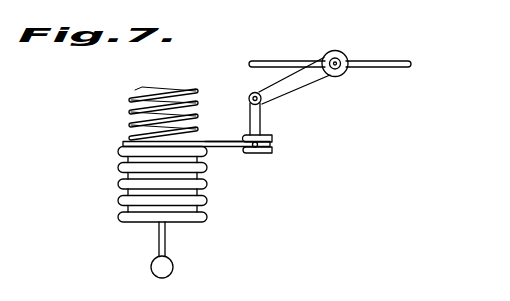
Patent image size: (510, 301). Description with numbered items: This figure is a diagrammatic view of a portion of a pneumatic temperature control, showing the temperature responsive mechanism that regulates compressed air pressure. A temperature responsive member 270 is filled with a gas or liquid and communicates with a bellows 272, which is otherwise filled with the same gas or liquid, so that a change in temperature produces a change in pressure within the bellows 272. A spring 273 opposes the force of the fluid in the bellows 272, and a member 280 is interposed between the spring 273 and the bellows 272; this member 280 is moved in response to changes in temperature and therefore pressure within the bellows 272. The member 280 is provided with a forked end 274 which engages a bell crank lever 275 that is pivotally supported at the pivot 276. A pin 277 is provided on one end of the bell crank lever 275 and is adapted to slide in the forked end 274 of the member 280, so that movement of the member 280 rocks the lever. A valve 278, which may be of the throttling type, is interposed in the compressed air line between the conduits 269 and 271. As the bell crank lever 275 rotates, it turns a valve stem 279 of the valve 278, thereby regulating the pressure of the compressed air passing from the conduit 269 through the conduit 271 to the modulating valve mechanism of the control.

The conduit 269 is at (266, 60).
The temperature responsive member 270 is at (172, 266).
The conduit 271 is at (384, 61).
The bellows 272 is at (118, 167).
The spring 273 is at (132, 100).
The forked end 274 is at (248, 155).
The bell crank lever 275 is at (285, 90).
The pivot 276 is at (250, 95).
The pin 277 is at (257, 153).
The valve 278 is at (340, 61).
The valve stem 279 is at (328, 52).
The member 280 is at (214, 141).